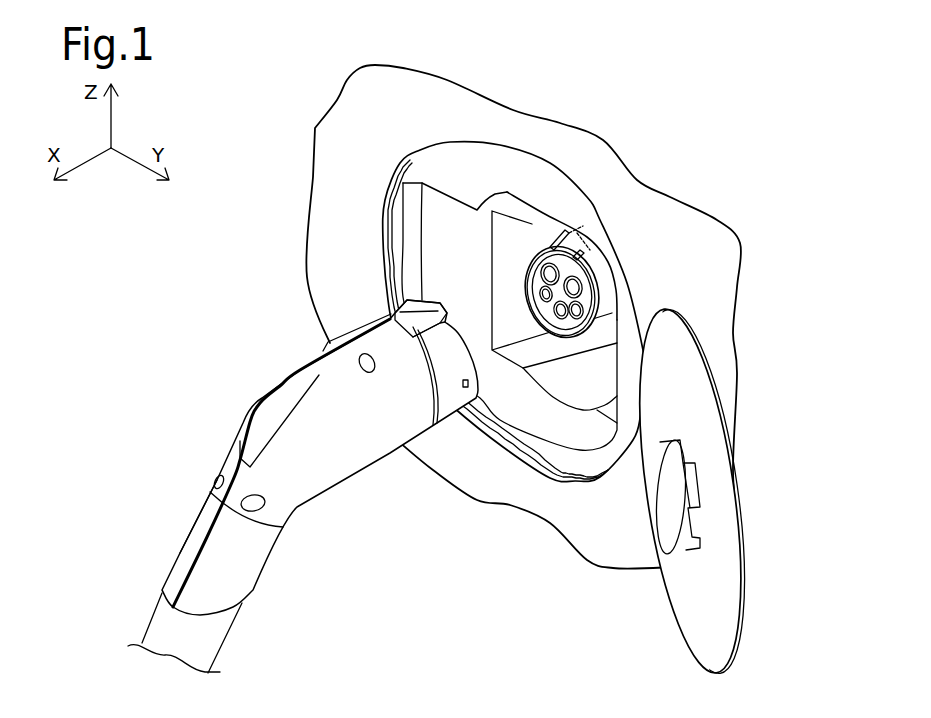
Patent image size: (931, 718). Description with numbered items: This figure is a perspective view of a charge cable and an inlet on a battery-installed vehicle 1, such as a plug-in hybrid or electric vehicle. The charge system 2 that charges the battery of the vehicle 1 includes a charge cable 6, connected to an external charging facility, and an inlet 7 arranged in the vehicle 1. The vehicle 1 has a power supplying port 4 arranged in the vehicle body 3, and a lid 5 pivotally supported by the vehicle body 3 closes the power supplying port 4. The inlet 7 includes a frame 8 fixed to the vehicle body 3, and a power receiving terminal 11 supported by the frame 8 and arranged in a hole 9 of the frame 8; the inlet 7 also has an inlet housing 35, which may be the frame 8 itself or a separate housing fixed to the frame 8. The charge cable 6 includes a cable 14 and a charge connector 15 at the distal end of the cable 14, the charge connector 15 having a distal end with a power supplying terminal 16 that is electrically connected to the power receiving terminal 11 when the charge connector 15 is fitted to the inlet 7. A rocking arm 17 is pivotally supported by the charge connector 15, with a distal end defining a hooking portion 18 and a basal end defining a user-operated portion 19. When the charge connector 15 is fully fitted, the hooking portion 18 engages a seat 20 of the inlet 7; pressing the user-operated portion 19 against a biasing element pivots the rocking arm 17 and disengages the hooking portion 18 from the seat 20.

The battery-installed vehicle 1 is at (509, 317).
The charge system 2 is at (276, 467).
The vehicle body 3 is at (312, 203).
The power supplying port 4 is at (500, 299).
The lid 5 is at (730, 629).
The charge cable 6 is at (193, 521).
The inlet 7 is at (595, 247).
The frame 8 is at (437, 228).
The hole 9 is at (506, 191).
The power receiving terminal 11 is at (598, 312).
The cable 14 is at (213, 638).
The charge connector 15 is at (338, 341).
The power supplying terminal 16 is at (451, 398).
The rocking arm 17 is at (390, 304).
The hooking portion 18 is at (440, 305).
The user-operated portion 19 is at (262, 390).
The seat 20 is at (580, 230).
The inlet housing 35 is at (597, 300).